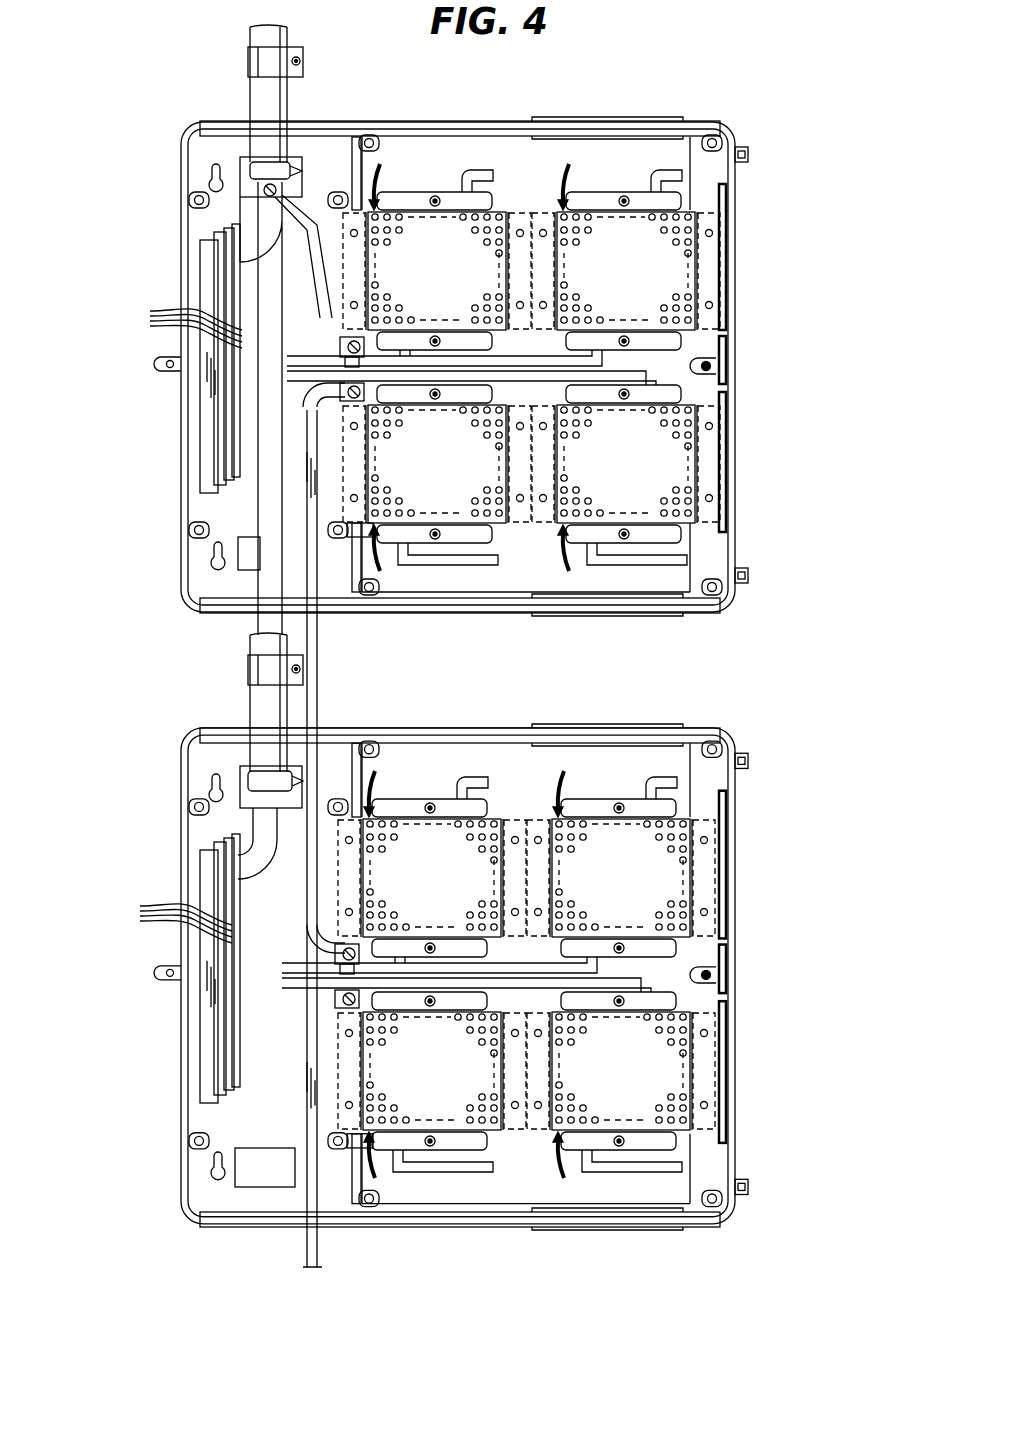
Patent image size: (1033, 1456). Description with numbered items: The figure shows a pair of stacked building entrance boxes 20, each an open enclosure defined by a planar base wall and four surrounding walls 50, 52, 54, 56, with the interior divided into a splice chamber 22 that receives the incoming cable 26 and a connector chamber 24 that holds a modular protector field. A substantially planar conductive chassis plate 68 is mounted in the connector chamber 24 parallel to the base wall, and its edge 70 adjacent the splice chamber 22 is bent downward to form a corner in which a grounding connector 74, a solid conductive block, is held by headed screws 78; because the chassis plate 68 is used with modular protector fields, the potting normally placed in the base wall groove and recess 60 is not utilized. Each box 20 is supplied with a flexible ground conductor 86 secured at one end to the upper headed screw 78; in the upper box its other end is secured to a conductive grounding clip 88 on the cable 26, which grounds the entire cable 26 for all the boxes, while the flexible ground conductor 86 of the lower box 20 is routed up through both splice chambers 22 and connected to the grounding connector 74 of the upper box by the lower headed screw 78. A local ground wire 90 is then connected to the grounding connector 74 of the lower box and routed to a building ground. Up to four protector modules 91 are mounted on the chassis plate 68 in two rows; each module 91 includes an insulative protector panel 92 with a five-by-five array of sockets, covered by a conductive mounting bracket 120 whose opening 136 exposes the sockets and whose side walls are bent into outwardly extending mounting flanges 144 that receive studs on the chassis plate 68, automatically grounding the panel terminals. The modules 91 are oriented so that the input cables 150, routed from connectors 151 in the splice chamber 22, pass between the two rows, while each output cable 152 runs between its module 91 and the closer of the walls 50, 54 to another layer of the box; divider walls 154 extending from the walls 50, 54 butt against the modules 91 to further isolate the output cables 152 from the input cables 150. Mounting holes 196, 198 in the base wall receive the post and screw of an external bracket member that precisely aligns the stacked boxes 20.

The building entrance box 20 is at (175, 550).
The splice chamber 22 is at (205, 585).
The connector chamber 24 is at (718, 182).
The cable 26 is at (255, 99).
The surrounding wall 50 is at (505, 121).
The surrounding wall 52 is at (722, 345).
The surrounding wall 54 is at (515, 615).
The surrounding wall 56 is at (183, 440).
The recess 60 is at (326, 323).
The chassis plate 68 is at (548, 160).
The edge 70 is at (350, 168).
The grounding connector 74 is at (345, 347).
The headed screw 78 is at (378, 325).
The flexible ground conductor 86 is at (318, 248).
The grounding clip 88 is at (302, 185).
The local ground wire 90 is at (306, 1070).
The protector module 91 is at (486, 674).
The protector panel 92 is at (422, 282).
The mounting bracket 120 is at (710, 273).
The opening 136 is at (372, 874).
The mounting flange 144 is at (672, 388).
The input cable 150 is at (415, 345).
The connector 151 is at (174, 663).
The output cable 152 is at (468, 175).
The divider wall 154 is at (357, 140).
The mounting hole 196 is at (210, 181).
The mounting hole 198 is at (712, 133).